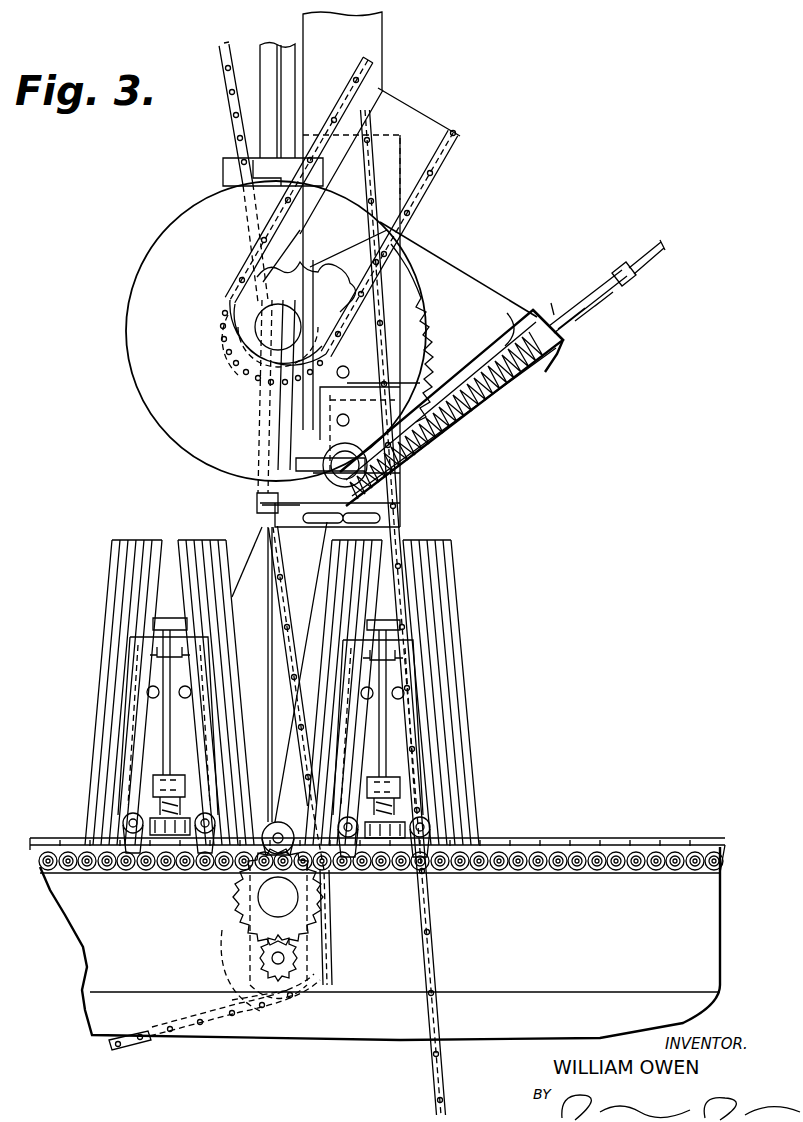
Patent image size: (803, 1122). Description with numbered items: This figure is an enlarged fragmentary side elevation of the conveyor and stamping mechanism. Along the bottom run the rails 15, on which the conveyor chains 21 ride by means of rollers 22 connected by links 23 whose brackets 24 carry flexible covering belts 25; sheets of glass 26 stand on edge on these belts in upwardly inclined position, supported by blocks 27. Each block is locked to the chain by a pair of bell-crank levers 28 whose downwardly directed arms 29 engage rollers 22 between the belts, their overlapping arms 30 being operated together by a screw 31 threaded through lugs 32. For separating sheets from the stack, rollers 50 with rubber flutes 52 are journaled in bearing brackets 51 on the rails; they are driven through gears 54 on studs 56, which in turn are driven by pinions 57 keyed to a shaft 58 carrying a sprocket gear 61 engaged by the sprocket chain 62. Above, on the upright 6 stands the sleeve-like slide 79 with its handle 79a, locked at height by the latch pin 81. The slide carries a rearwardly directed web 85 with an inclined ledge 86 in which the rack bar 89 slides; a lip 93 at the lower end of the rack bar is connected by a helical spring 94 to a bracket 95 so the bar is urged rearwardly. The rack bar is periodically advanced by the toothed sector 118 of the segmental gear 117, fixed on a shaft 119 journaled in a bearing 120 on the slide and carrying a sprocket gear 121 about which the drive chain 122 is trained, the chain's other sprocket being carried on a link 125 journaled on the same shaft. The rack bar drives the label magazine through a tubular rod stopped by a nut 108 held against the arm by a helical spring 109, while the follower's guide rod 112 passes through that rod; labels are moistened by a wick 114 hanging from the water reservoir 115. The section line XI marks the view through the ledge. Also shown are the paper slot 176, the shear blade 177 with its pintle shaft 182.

The forward pair of vertical supports 6 is at (382, 32).
The slot 176 is at (272, 56).
The sprocket chain 62 is at (230, 122).
The segmental gear 117 is at (162, 400).
The shaft 119 is at (268, 323).
The bearing 120 is at (224, 345).
The sprocket gear 121 is at (322, 276).
The drive chain 122 is at (462, 137).
The link 125 is at (420, 124).
The toothed sector 118 is at (434, 350).
The web 85 is at (470, 271).
The rack bar 89 is at (490, 338).
The ledge 86 is at (507, 390).
The helical spring 94 is at (487, 408).
The bracket 95 is at (566, 345).
The helical spring 109 is at (600, 292).
The nut 108 is at (617, 265).
The guide rod 112 is at (666, 243).
The reservoir 115 is at (345, 378).
The section line XI is at (325, 446).
The latch pin 81 is at (400, 473).
The lip 93 is at (400, 500).
The sleeve-like slide 79 is at (398, 492).
The handle 79a is at (403, 517).
The wick 114 is at (300, 451).
The shear blade 177 is at (284, 418).
The sheets of glass 26 is at (120, 571).
The blocks 27 is at (130, 672).
The screw 31 is at (165, 731).
The lugs 32 is at (423, 638).
The arms 30 is at (120, 800).
The shaft 182 is at (270, 628).
The flute 52 is at (278, 800).
The rollers 50 is at (258, 824).
The downwardly directed arms 29 is at (131, 846).
The bell-crank levers 28 is at (424, 802).
The covering strips or belts 25 is at (538, 841).
The conveyor chains 21 is at (724, 859).
The rollers 22 is at (568, 864).
The links 23 is at (536, 862).
The brackets 24 is at (629, 864).
The rails 15 is at (706, 932).
The studs 56 is at (278, 895).
The gears 54 is at (233, 893).
The pinions 57 is at (258, 956).
The shaft 58 is at (270, 962).
The bearing brackets 51 is at (312, 953).
The sprocket gear 61 is at (230, 1001).